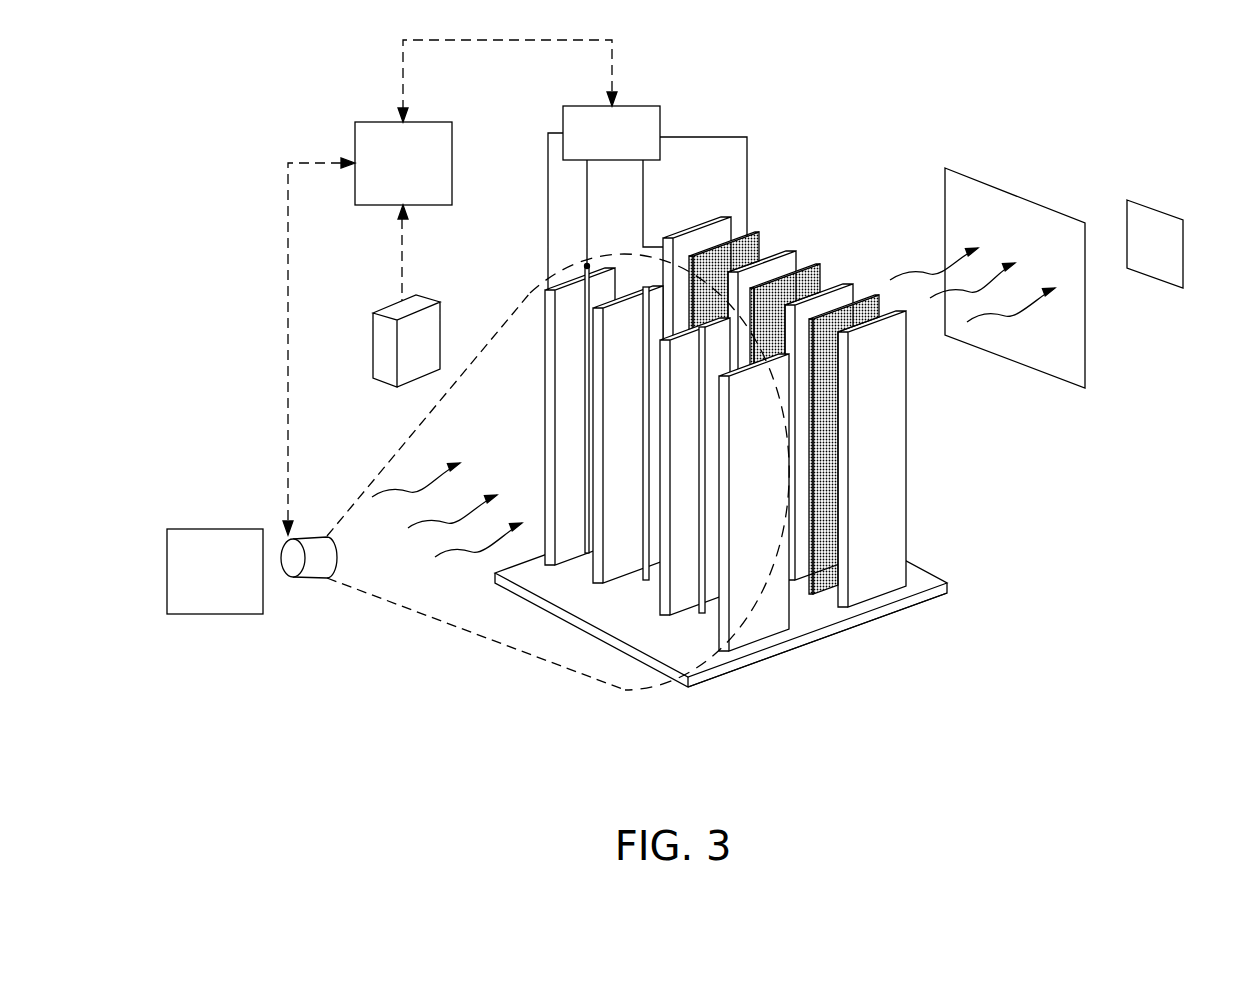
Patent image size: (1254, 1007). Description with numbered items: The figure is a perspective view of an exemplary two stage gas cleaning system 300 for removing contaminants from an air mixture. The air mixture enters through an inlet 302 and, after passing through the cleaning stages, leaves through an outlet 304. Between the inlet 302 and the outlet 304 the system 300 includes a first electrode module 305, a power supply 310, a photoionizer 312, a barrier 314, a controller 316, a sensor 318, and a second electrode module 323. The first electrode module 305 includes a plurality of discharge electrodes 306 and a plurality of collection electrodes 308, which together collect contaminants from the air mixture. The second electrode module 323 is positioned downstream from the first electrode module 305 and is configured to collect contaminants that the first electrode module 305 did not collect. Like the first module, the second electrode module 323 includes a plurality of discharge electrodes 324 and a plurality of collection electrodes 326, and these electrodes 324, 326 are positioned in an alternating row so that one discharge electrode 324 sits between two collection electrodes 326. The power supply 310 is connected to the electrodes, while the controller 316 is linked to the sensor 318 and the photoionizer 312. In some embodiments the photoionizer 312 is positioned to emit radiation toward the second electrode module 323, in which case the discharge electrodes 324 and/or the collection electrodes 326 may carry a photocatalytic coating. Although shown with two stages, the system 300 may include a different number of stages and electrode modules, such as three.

The two stage gas cleaning system 300 is at (183, 150).
The inlet 302 is at (193, 587).
The outlet 304 is at (1157, 208).
The first electrode module 305 is at (775, 663).
The discharge electrodes 306 is at (705, 613).
The collection electrodes 308 is at (788, 623).
The power supply 310 is at (592, 146).
The photoionizer 312 is at (298, 578).
The barrier 314 is at (1085, 327).
The controller 316 is at (381, 176).
The sensor 318 is at (375, 312).
The second electrode module 323 is at (906, 617).
The discharge electrodes 324 is at (760, 230).
The collection electrodes 326 is at (717, 222).